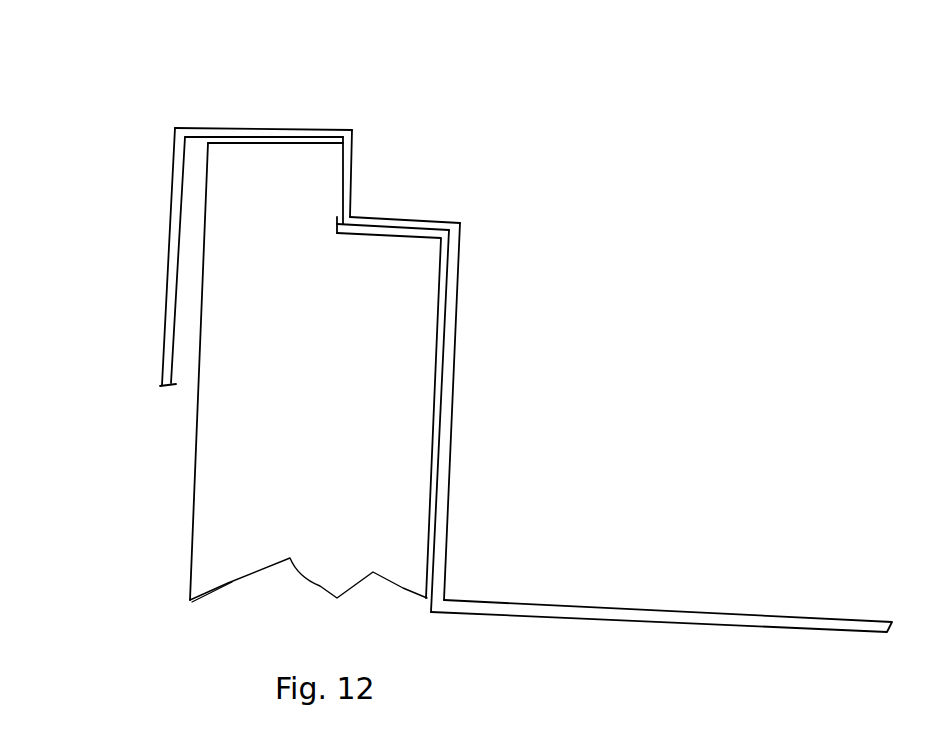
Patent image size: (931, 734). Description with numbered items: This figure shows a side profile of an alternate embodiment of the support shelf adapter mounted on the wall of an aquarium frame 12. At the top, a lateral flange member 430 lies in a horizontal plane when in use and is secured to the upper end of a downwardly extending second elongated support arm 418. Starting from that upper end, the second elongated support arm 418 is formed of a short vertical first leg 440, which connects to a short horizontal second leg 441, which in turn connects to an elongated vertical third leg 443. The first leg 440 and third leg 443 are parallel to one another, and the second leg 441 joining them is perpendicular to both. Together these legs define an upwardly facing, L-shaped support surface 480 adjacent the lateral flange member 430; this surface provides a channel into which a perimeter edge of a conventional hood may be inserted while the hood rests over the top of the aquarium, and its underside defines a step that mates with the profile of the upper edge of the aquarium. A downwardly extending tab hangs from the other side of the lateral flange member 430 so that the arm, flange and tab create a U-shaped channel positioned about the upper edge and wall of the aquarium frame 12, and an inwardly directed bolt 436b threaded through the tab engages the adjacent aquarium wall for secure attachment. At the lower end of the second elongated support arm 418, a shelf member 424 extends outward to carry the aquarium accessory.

The aquarium frame 12 is at (332, 409).
The bolt 436b is at (170, 272).
The lateral flange member 430 is at (262, 130).
The first leg 440 is at (352, 167).
The L-shaped support surface 480 is at (375, 205).
The second leg 441 is at (425, 218).
The second elongated support arm 418 is at (462, 288).
The third leg 443 is at (453, 402).
The shelf member 424 is at (578, 602).